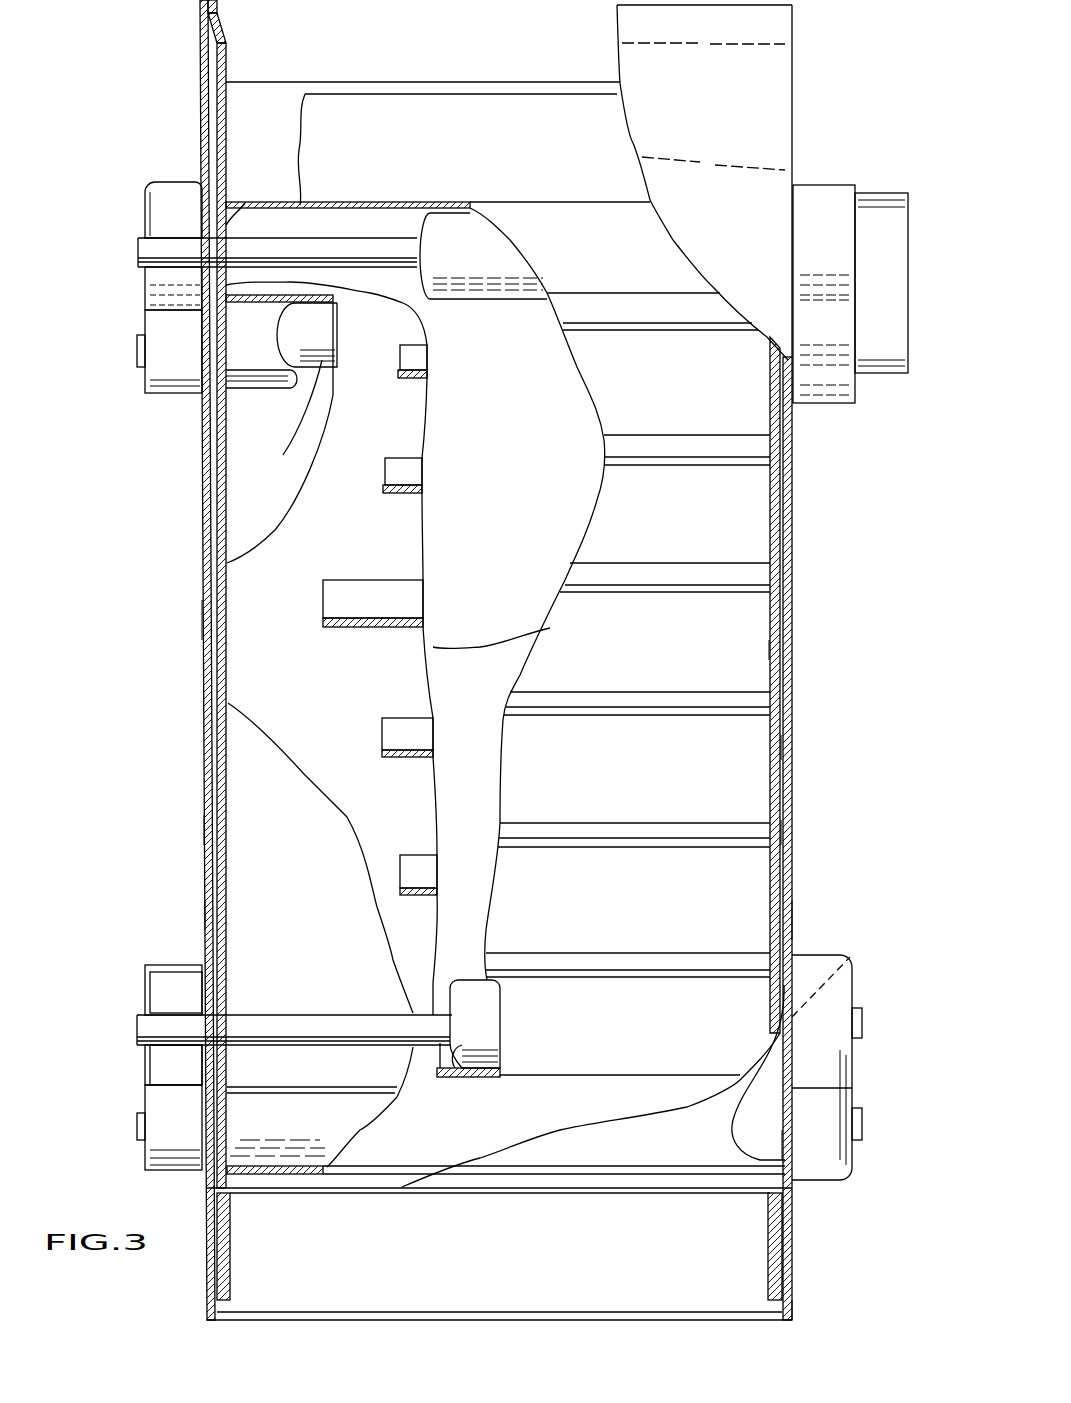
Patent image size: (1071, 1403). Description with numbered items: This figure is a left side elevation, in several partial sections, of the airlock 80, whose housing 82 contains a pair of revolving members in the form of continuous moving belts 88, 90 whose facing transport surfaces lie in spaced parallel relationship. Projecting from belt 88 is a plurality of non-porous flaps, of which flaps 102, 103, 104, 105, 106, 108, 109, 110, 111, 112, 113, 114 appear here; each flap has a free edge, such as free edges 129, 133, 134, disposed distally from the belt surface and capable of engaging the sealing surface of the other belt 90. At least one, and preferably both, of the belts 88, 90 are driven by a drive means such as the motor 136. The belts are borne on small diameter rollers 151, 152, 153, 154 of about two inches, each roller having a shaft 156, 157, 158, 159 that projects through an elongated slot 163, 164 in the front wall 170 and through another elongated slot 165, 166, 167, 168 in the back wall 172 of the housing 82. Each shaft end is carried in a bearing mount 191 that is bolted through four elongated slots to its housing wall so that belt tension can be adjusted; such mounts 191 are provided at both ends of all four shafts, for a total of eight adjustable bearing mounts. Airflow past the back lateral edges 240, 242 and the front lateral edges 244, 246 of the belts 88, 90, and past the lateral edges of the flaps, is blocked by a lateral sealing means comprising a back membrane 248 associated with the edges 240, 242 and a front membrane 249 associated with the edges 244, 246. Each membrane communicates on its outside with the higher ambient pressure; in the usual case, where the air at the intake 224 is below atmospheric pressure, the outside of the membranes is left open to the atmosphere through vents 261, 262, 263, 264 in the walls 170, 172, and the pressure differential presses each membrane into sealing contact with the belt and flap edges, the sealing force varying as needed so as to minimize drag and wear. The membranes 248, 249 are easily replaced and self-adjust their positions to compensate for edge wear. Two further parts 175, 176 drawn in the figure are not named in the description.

The airlock 80 is at (870, 912).
The housing 82 is at (790, 1328).
The belt 88 is at (480, 598).
The belt 90 is at (262, 582).
The flap 102 is at (406, 362).
The flap 103 is at (392, 478).
The flap 104 is at (362, 592).
The flap 105 is at (385, 740).
The flap 106 is at (416, 862).
The flap 108 is at (603, 1108).
The flap 109 is at (610, 960).
The flap 110 is at (598, 833).
The flap 111 is at (586, 700).
The flap 112 is at (615, 578).
The flap 113 is at (645, 448).
The flap 114 is at (634, 312).
The free edge 129 is at (650, 983).
The free edge 133 is at (702, 463).
The free edge 134 is at (692, 338).
The motor 136 is at (882, 370).
The roller 151 is at (472, 290).
The roller 152 is at (470, 975).
The roller 153 is at (250, 1102).
The roller 154 is at (284, 393).
The shaft 156 is at (136, 250).
The shaft 157 is at (270, 1030).
The shaft 158 is at (865, 1142).
The shaft 159 is at (283, 416).
The elongated slot 163 is at (790, 1142).
The elongated slot 164 is at (845, 973).
The elongated slot 165 is at (205, 222).
The elongated slot 166 is at (188, 385).
The elongated slot 167 is at (190, 1155).
The elongated slot 168 is at (200, 1008).
The front wall 170 is at (793, 648).
The back wall 172 is at (204, 700).
The plate 175 is at (548, 1078).
The bottom plate 176 is at (363, 1180).
The bearing mount 191 is at (153, 185).
The intake 224 is at (540, 64).
The back lateral edge 240 is at (230, 230).
The back lateral edge 242 is at (228, 677).
The front lateral edge 244 is at (768, 648).
The front lateral edge 246 is at (745, 1136).
The back membrane 248 is at (212, 830).
The front membrane 249 is at (792, 745).
The vent 261 is at (204, 617).
The vent 262 is at (206, 918).
The vent 263 is at (789, 530).
The vent 264 is at (792, 830).